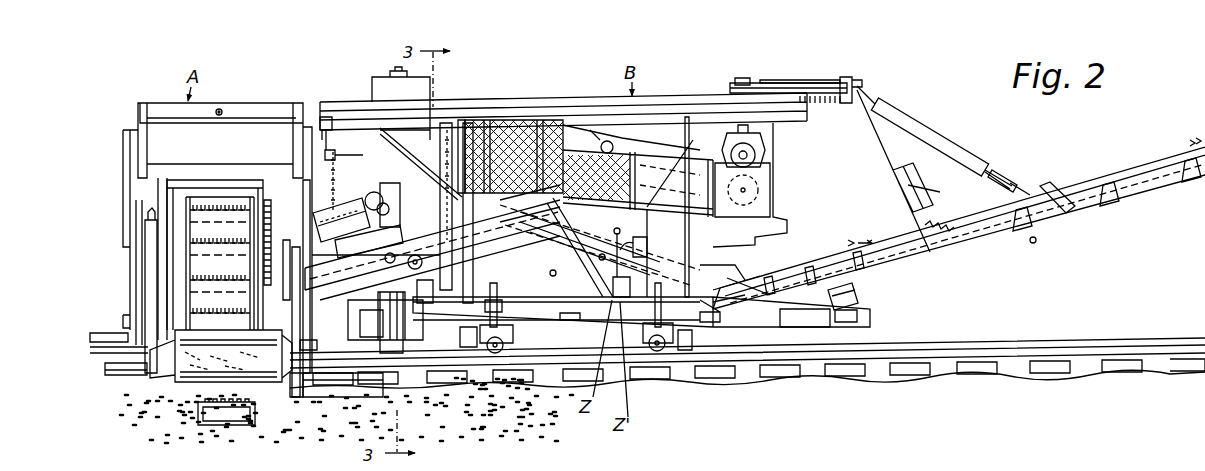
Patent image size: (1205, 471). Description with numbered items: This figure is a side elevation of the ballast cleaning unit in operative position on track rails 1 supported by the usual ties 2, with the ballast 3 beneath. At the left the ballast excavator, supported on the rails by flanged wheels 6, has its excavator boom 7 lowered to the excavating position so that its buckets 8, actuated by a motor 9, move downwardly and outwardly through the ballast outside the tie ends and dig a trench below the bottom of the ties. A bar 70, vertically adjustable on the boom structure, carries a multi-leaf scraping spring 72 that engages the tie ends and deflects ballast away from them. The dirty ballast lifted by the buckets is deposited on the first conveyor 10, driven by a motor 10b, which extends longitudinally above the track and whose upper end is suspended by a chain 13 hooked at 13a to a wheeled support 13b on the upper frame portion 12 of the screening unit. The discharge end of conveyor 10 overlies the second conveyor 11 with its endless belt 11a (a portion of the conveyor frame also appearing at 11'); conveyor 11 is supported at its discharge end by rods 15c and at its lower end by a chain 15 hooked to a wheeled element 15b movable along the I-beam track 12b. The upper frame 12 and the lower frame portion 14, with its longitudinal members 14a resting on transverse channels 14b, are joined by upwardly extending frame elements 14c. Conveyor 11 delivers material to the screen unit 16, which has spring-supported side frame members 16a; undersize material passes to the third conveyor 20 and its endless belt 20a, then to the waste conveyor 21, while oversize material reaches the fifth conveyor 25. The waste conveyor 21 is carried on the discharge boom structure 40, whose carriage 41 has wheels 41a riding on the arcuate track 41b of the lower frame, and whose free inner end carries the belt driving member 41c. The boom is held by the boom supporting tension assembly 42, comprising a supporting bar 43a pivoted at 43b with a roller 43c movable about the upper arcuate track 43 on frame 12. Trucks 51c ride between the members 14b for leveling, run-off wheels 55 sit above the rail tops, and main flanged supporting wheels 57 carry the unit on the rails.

The track rails 1 is at (1010, 350).
The ties 2 is at (368, 386).
The ballast 3 is at (172, 420).
The flanged wheels 6 is at (240, 345).
The excavator boom 7 is at (146, 290).
The buckets 8 is at (208, 216).
The motor 9 is at (323, 307).
The number 1 conveyor 10 is at (285, 240).
The motor 10b is at (376, 192).
The number 2 conveyor 11 is at (432, 245).
The conveyor section 11' is at (518, 219).
The endless belt 11a is at (417, 283).
The upper frame portion 12 is at (354, 115).
The I-beam track 12b is at (447, 122).
The chain 13 is at (334, 180).
The hook 13a is at (325, 151).
The wheeled support 13b is at (322, 117).
The lower frame portion 14 is at (590, 306).
The longitudinally extending members 14a is at (572, 321).
The transversely extending members 14b is at (513, 328).
The upwardly extending frame elements 14c is at (730, 256).
The chain 15 is at (442, 150).
The wheeled element 15b is at (462, 121).
The rods 15c is at (603, 141).
The screen unit 16 is at (596, 226).
The side frame members 16a is at (623, 138).
The number 3 conveyor 20 is at (616, 299).
The endless belt 20a is at (648, 240).
The number 4 waste conveyor 21 is at (1084, 188).
The number 5 conveyor 25 is at (369, 311).
The discharge boom structure 40 is at (1158, 190).
The carriage 41 is at (860, 290).
The wheels 41a is at (842, 323).
The arcuate track 41b is at (810, 328).
The belt driving member 41c is at (712, 323).
The boom supporting tension assembly 42 is at (942, 140).
The upper arcuate track 43 is at (826, 104).
The supporting bar 43a is at (803, 81).
The pivot 43b is at (743, 78).
The roller 43c is at (858, 80).
The trucks 51c is at (502, 350).
The run-off wheels 55 is at (470, 348).
The main flanged supporting wheels 57 is at (496, 353).
The bar 70 is at (287, 394).
The multi-leaf scraping spring 72 is at (303, 398).